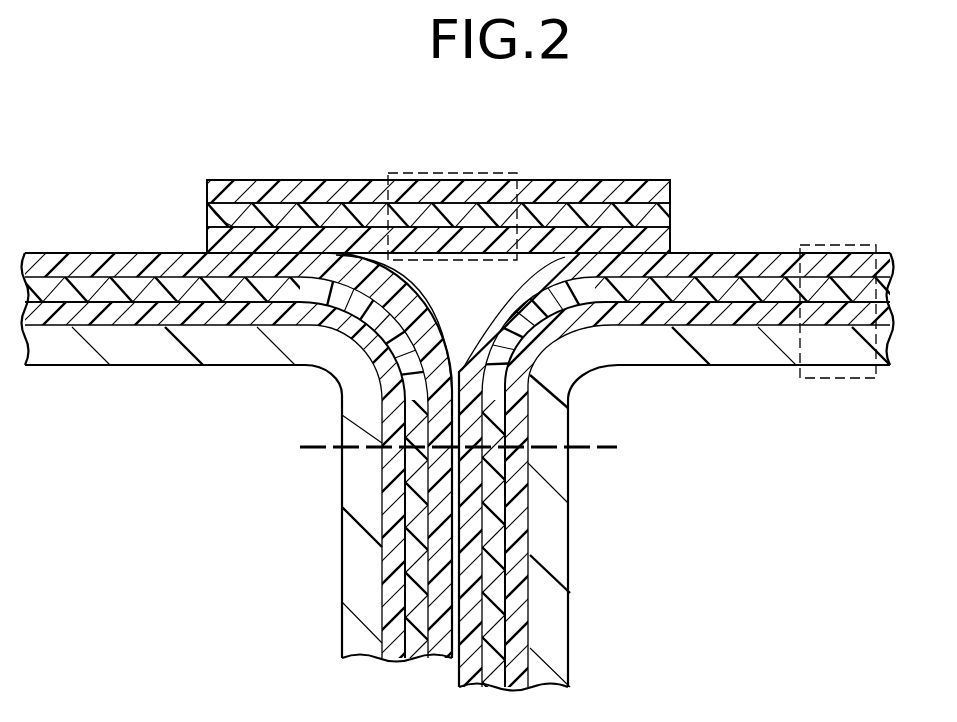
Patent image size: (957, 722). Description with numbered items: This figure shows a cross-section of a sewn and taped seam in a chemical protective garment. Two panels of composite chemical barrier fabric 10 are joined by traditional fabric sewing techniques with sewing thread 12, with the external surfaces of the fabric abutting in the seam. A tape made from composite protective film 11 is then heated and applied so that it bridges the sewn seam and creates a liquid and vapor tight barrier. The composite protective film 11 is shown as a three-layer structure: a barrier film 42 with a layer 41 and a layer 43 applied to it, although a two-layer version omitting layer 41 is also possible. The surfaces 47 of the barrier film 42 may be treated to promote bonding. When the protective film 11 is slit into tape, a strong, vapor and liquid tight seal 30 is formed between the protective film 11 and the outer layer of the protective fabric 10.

The composite chemical barrier fabric 10 is at (818, 396).
The composite protective film 11 is at (443, 160).
The sewing thread 12 is at (328, 452).
The vapor and liquid tight seal 30 is at (327, 260).
The layer applied to the barrier film 41 is at (207, 192).
The barrier film 42 is at (672, 218).
The layer applied to the barrier film 43 is at (672, 242).
The surfaces of the barrier film 47 is at (207, 218).